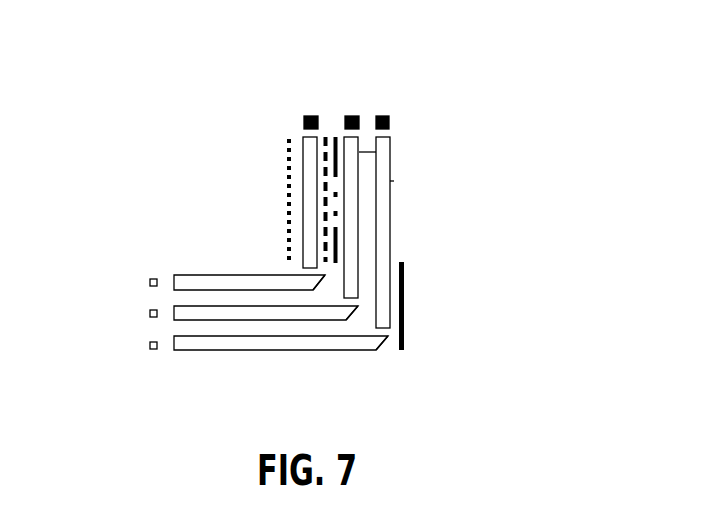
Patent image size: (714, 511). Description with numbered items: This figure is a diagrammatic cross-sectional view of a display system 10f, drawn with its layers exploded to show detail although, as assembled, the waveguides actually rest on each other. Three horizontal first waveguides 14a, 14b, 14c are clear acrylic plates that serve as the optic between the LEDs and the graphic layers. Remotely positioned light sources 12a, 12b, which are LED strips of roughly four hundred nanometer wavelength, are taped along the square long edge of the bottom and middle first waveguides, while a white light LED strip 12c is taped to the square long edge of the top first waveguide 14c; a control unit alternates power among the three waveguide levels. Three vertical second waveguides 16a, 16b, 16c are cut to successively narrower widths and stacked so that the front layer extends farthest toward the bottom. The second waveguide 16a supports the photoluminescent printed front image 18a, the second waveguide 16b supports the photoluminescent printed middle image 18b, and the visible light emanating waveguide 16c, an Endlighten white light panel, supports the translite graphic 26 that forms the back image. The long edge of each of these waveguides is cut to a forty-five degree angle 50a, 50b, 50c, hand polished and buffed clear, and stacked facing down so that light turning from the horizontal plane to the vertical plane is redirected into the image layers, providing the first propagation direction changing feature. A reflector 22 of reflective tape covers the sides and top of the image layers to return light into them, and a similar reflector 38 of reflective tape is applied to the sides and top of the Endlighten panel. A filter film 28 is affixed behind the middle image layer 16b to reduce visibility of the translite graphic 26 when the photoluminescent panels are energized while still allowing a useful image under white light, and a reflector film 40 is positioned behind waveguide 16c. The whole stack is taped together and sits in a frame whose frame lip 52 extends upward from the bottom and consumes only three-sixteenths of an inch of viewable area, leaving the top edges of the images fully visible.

The display system 10f is at (449, 114).
The remotely positioned light source 12a is at (150, 346).
The remotely positioned light source 12b is at (150, 314).
The white light LED strip 12c is at (150, 283).
The first waveguide 14a is at (217, 350).
The first waveguide 14b is at (190, 320).
The first waveguide 14c is at (193, 275).
The second waveguide 16a is at (392, 243).
The second waveguide 16b is at (361, 213).
The visible light emanating waveguide 16c is at (301, 189).
The photoluminescent printed image 18a is at (392, 181).
The photoluminescent printed image 18b is at (376, 152).
The reflector 22 is at (352, 116).
The translite graphic 26 is at (324, 137).
The filter film 28 is at (335, 137).
The reflector 38 is at (303, 121).
The reflector film 40 is at (286, 154).
The 45 degree angle 50a is at (384, 351).
The 45 degree angle 50b is at (355, 321).
The 45 degree angle 50c is at (323, 290).
The frame lip 52 is at (404, 330).